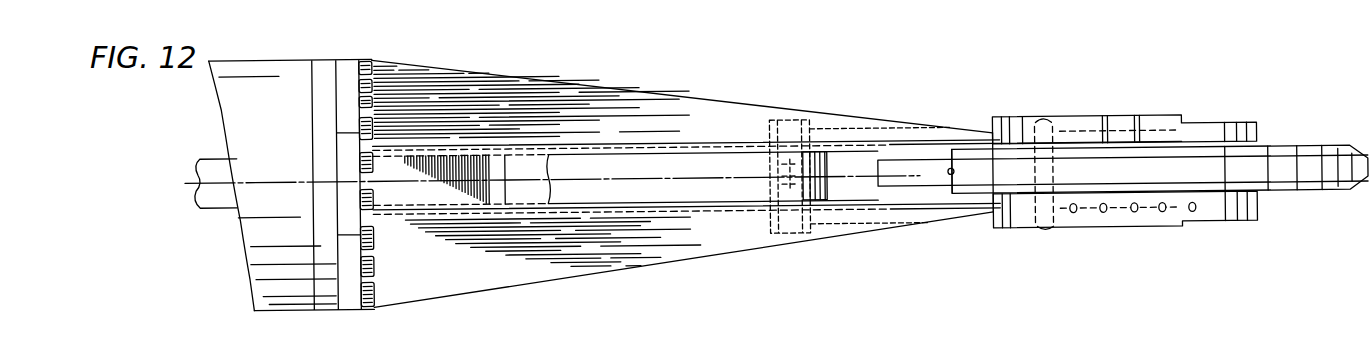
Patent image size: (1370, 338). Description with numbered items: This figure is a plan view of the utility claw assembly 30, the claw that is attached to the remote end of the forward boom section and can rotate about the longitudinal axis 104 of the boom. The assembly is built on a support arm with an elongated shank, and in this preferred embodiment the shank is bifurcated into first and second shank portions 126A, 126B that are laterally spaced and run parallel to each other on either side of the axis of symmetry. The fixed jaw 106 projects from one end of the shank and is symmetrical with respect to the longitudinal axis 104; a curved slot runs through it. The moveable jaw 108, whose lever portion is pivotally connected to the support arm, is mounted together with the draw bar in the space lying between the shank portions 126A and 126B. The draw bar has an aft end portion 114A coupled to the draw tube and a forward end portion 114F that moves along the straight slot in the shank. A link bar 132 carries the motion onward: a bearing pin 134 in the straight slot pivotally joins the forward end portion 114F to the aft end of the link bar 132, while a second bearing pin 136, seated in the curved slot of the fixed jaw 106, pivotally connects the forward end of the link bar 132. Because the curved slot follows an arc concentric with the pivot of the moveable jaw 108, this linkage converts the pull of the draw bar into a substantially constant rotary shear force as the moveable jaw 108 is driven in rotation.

The utility claw assembly 30 is at (957, 106).
The longitudinal axis 104 is at (665, 176).
The fixed jaw 106 is at (1225, 226).
The moveable jaw 108 is at (1313, 151).
The aft end portion 114A is at (207, 205).
The forward end portion 114F is at (826, 187).
The first shank portion 126A is at (558, 274).
The second shank portion 126B is at (532, 75).
The link bar 132 is at (982, 228).
The bearing pin 134 is at (777, 238).
The bearing pin 136 is at (1045, 231).